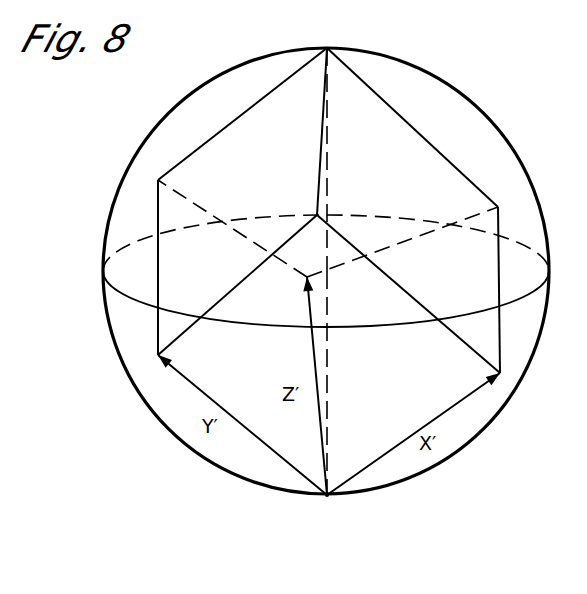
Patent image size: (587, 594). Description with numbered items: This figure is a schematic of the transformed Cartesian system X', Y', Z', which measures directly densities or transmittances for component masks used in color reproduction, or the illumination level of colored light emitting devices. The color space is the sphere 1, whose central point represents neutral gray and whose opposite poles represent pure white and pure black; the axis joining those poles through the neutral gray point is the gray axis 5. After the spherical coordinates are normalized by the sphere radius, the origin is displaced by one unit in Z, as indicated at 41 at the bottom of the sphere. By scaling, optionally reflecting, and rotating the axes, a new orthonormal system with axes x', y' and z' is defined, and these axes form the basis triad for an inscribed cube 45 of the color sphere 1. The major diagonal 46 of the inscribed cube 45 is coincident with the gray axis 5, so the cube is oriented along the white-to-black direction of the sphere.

The sphere 1 is at (470, 95).
The inscribed cube 45 is at (445, 154).
The gray axis 5 is at (330, 182).
The major diagonal 46 is at (330, 305).
The displaced origin 41 is at (327, 497).